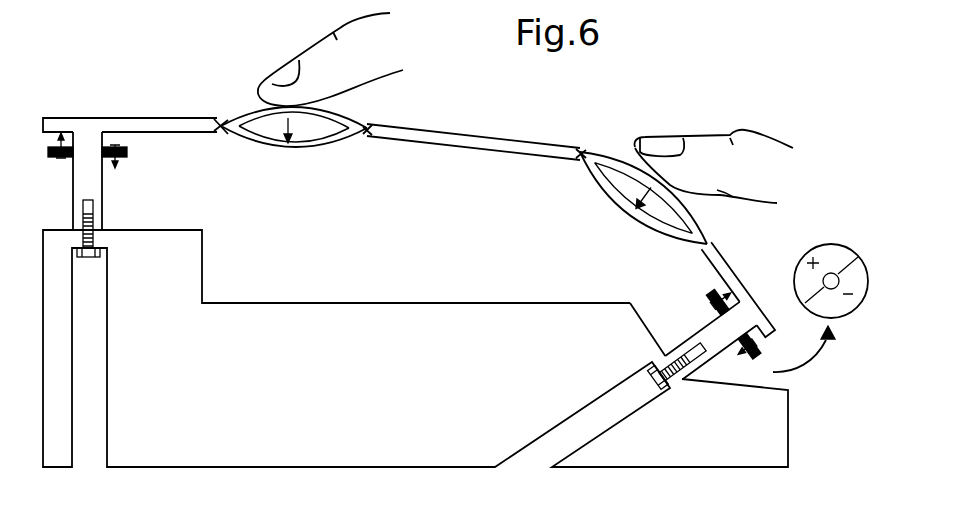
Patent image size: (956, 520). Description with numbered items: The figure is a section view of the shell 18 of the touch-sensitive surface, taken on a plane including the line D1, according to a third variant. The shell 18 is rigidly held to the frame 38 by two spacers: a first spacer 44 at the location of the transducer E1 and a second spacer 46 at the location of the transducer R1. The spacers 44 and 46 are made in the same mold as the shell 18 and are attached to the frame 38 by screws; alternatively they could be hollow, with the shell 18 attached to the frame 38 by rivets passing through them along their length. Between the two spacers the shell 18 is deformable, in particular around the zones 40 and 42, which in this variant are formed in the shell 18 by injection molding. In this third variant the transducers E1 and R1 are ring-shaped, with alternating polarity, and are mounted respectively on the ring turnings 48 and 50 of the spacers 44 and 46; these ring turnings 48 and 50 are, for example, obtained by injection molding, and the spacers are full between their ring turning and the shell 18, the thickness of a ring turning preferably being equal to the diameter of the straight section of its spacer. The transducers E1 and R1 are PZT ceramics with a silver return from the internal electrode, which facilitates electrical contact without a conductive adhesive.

The shell 18 is at (450, 148).
The frame 38 is at (400, 303).
The deformable zone 40 is at (266, 140).
The deformable zone 42 is at (623, 188).
The first spacer 44 is at (92, 185).
The second spacer 46 is at (707, 333).
The ring turning 48 is at (51, 130).
The ring turning 50 is at (752, 348).
The transducer E1 is at (116, 168).
The transducer R1 is at (712, 304).